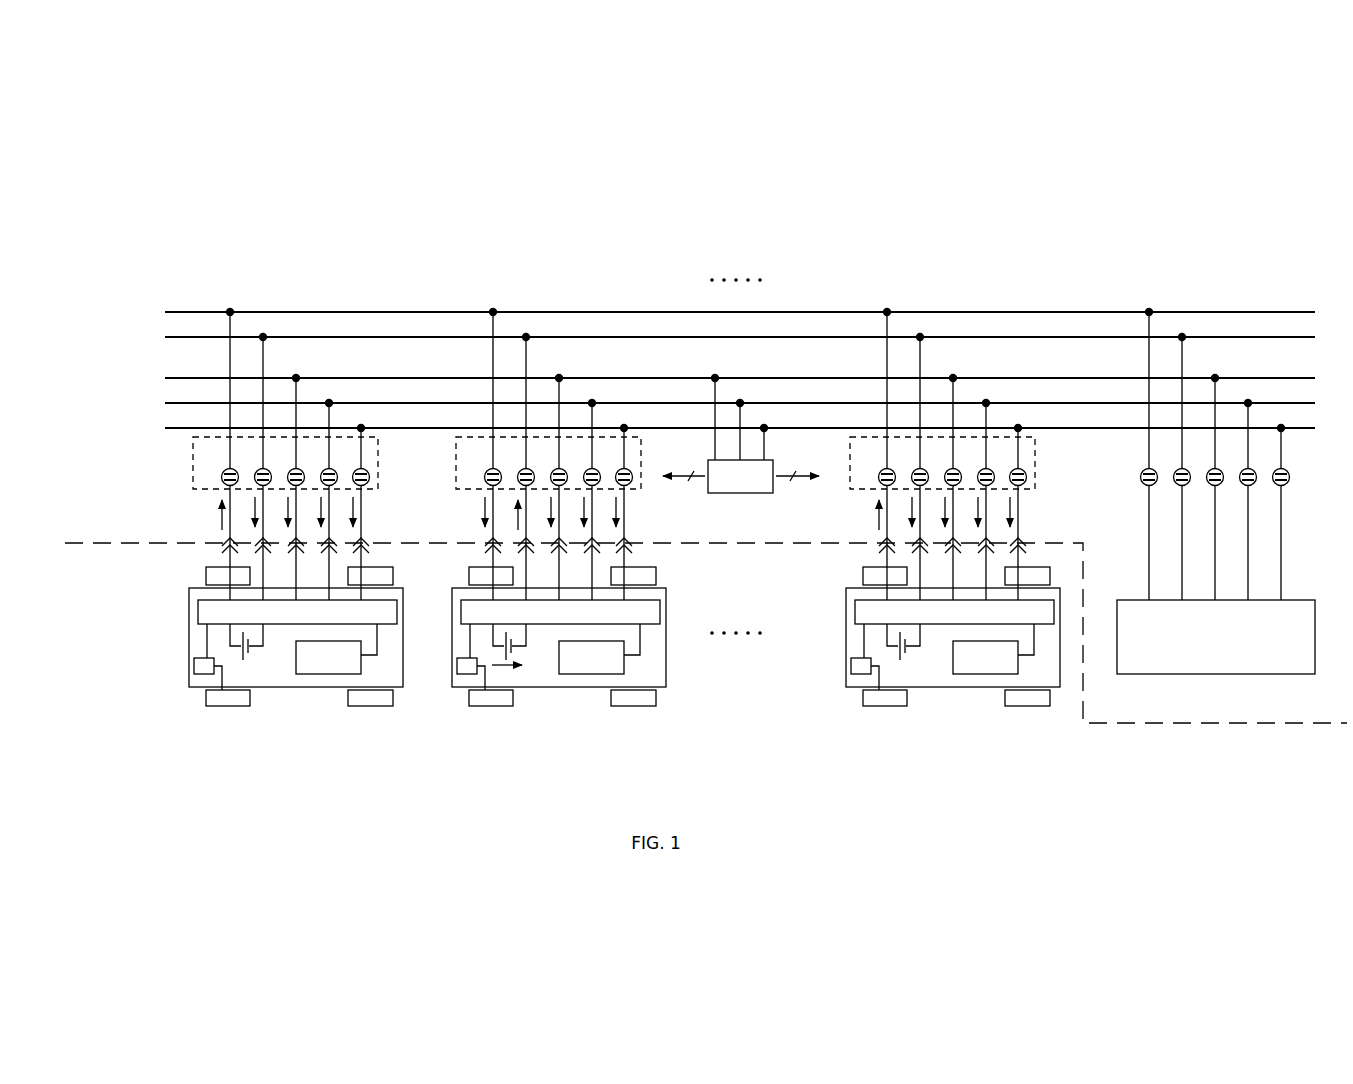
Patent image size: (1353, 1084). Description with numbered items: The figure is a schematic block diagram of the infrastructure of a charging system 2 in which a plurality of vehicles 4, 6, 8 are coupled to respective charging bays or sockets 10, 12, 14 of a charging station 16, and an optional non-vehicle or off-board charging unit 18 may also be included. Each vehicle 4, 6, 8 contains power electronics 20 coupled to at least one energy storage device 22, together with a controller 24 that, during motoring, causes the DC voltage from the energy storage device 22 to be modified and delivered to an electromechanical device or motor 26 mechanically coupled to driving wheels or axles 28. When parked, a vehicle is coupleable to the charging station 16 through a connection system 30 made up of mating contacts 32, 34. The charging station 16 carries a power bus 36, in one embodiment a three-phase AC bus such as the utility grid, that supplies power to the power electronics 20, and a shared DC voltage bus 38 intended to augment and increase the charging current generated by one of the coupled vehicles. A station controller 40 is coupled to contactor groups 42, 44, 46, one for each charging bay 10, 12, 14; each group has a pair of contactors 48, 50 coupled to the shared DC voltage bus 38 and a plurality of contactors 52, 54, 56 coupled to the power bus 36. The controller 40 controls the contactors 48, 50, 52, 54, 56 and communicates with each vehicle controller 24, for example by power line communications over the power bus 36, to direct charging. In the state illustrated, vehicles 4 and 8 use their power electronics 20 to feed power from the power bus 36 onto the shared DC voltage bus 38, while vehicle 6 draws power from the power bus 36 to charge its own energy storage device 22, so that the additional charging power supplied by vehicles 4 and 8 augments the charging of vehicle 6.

The charging system 2 is at (733, 184).
The vehicle 4 is at (296, 688).
The vehicle 6 is at (561, 688).
The vehicle 8 is at (955, 688).
The charging bay 10 is at (394, 292).
The charging bay 12 is at (460, 292).
The charging bay 14 is at (1050, 292).
The charging station 16 is at (152, 479).
The non-vehicle charging unit 18 is at (1216, 492).
The power electronics 20 is at (198, 603).
The energy storage device 22 is at (250, 648).
The controller 24 is at (665, 649).
The motor 26 is at (194, 664).
The driving wheels 28 is at (228, 712).
The connection system 30 is at (172, 549).
The mating contact 32 is at (225, 545).
The mating contact 34 is at (227, 537).
The power bus 36 is at (405, 379).
The shared DC voltage bus 38 is at (445, 313).
The controller 40 is at (741, 434).
The contactor group 42 is at (193, 440).
The contactor group 44 is at (641, 440).
The contactor group 46 is at (850, 440).
The contactor 48 is at (226, 471).
The contactor 50 is at (259, 471).
The contactor 52 is at (292, 471).
The contactor 54 is at (325, 471).
The contactor 56 is at (357, 471).